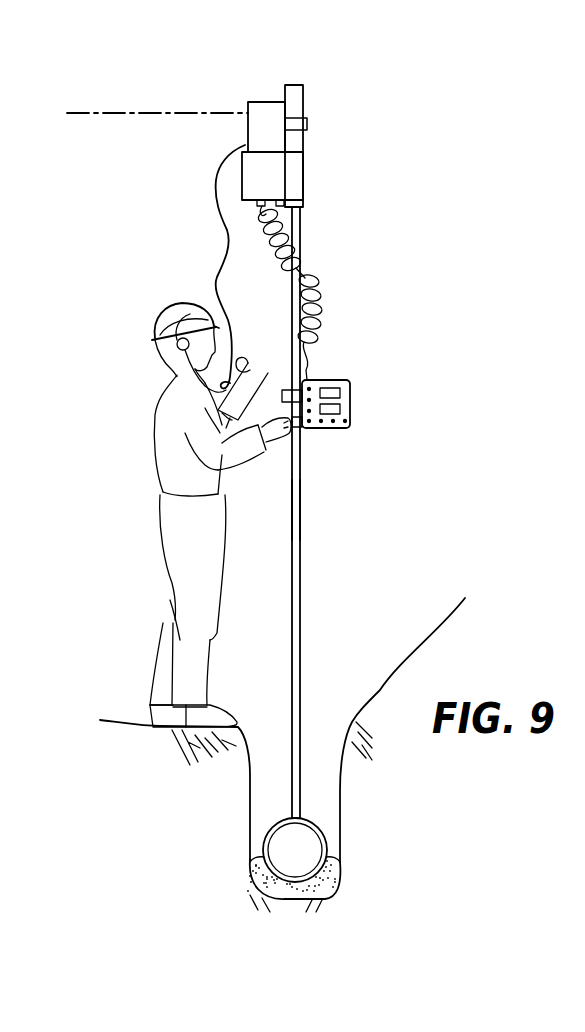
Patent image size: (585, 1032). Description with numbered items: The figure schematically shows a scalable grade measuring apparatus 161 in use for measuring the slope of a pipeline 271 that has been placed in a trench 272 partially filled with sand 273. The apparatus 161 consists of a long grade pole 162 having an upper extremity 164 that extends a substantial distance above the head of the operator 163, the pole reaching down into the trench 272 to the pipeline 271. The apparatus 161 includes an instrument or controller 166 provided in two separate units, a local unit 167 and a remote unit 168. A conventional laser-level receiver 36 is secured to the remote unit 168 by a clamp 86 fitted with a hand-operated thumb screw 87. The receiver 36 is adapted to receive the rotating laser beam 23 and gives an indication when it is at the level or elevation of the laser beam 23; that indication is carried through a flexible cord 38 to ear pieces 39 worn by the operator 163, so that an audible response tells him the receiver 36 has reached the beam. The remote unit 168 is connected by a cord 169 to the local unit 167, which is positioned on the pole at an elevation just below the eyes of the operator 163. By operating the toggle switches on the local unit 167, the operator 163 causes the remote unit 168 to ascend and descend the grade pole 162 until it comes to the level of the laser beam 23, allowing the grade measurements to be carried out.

The laser beam 23 is at (92, 113).
The laser-level receiver 36 is at (262, 102).
The flexible cord 38 is at (226, 242).
The ear pieces 39 is at (152, 330).
The clamp 86 is at (296, 117).
The thumb screw 87 is at (307, 124).
The scalable grade measuring apparatus 161 is at (398, 182).
The grade pole 162 is at (301, 513).
The operator 163 is at (165, 432).
The upper extremity 164 is at (301, 214).
The controller 166 is at (316, 264).
The local unit 167 is at (340, 380).
The remote unit 168 is at (288, 170).
The cord 169 is at (322, 299).
The pipeline 271 is at (327, 840).
The trench 272 is at (250, 806).
The sand 273 is at (340, 885).